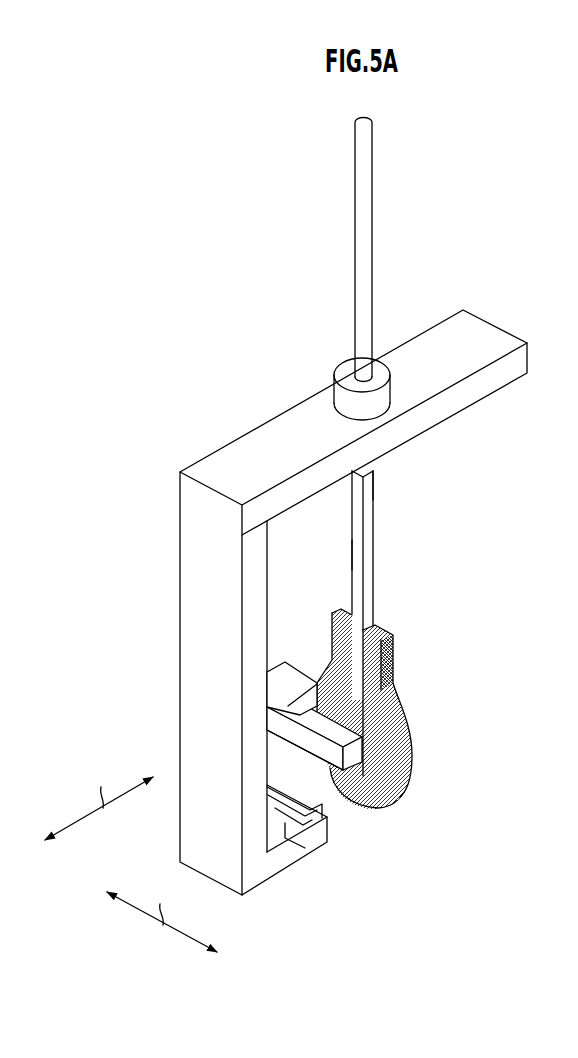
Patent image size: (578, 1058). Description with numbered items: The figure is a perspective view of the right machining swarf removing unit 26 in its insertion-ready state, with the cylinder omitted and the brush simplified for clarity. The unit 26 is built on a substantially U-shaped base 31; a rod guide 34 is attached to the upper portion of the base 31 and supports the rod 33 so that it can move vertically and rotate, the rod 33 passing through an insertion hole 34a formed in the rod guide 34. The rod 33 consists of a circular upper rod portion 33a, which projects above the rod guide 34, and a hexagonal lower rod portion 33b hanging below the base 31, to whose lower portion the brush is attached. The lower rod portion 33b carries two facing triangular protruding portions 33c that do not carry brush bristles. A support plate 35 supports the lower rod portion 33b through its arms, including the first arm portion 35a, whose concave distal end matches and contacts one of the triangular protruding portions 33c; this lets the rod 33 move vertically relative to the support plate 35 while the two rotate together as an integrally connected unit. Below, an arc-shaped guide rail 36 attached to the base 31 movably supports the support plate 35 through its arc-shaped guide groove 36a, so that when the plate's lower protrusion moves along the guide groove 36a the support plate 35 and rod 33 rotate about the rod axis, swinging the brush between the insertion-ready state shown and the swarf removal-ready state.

The right machining swarf removing unit 26 is at (268, 224).
The base 31 is at (486, 330).
The rod 33 is at (376, 196).
The upper rod portion 33a is at (364, 264).
The lower rod portion 33b is at (374, 520).
The triangular protruding portion 33c is at (373, 468).
The rod guide 34 is at (369, 371).
The insertion hole 34a is at (343, 366).
The support plate 35 is at (297, 672).
The first arm portion 35a is at (334, 771).
The guide rail 36 is at (312, 806).
The guide groove 36a is at (283, 845).